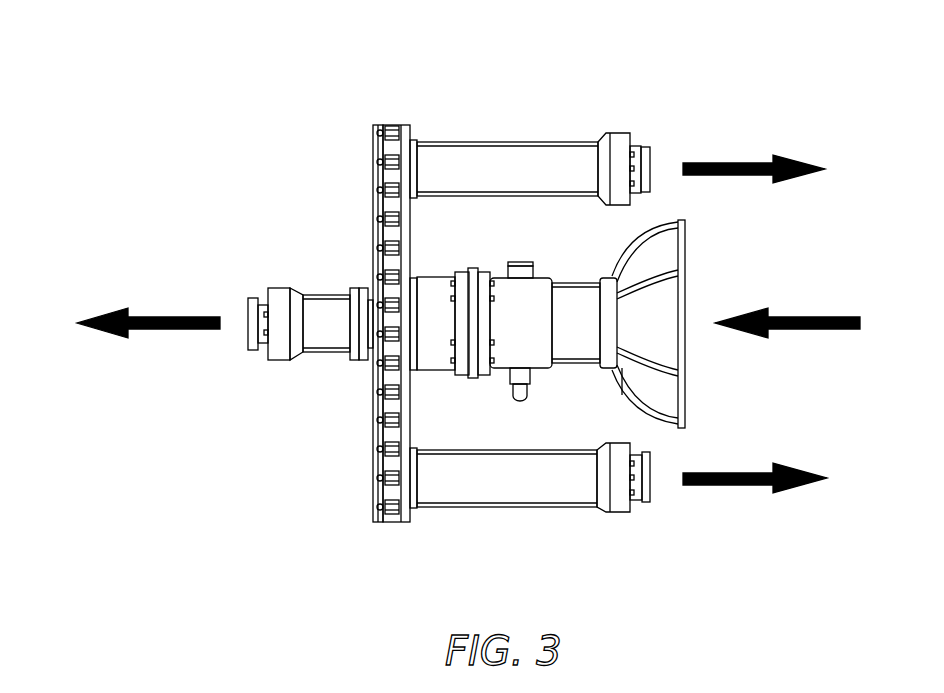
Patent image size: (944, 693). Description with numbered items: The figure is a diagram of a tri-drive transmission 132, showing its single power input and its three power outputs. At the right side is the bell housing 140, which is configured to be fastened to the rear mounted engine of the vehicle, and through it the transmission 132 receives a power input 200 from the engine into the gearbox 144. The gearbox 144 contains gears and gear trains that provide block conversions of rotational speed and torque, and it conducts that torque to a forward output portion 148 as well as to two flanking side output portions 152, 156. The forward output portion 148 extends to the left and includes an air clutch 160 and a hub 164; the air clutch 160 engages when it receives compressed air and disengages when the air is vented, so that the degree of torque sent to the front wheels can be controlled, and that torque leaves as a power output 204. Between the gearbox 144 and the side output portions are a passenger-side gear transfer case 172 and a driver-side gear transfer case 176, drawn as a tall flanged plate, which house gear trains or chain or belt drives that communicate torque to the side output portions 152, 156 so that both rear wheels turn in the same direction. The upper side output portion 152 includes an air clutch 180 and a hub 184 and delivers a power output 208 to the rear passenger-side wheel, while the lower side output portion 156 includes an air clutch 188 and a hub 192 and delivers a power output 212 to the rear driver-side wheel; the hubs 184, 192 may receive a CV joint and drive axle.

The transmission 132 is at (250, 60).
The bell housing 140 is at (627, 407).
The gearbox 144 is at (522, 290).
The forward output portion 148 is at (322, 300).
The side output portion 152 is at (511, 152).
The side output portion 156 is at (503, 498).
The air clutch 160 is at (281, 362).
The hub 164 is at (255, 298).
The passenger-side gear transfer case 172 is at (375, 153).
The driver-side gear transfer case 176 is at (377, 450).
The air clutch 180 is at (615, 134).
The hub 184 is at (648, 148).
The air clutch 188 is at (617, 510).
The hub 192 is at (646, 505).
The power input 200 is at (806, 333).
The power output 204 is at (148, 333).
The power output 208 is at (745, 178).
The power output 212 is at (745, 488).